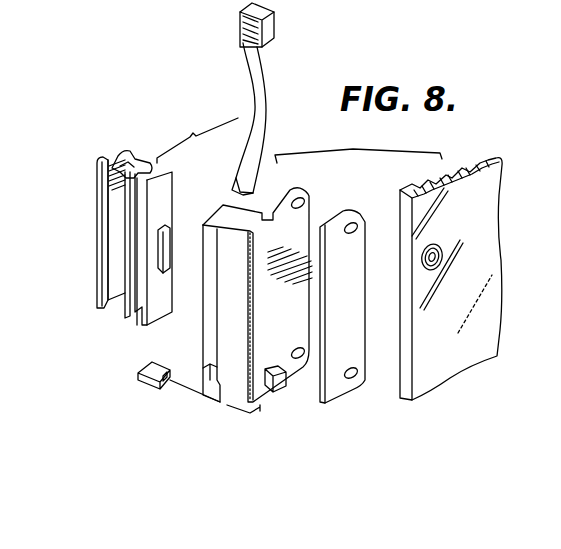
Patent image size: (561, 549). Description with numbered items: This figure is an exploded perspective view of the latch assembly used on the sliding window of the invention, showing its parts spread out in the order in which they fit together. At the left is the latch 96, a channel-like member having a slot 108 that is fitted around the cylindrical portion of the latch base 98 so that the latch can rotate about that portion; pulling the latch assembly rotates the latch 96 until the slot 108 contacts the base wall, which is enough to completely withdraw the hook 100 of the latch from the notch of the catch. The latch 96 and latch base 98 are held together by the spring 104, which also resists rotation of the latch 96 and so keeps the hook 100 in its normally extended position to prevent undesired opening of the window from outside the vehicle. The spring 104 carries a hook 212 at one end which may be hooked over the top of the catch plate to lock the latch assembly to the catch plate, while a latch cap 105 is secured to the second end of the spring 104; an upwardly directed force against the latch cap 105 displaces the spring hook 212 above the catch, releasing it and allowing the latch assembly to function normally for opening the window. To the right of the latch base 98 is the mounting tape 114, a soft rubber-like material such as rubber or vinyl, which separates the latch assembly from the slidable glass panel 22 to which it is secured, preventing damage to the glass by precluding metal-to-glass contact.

The slidable glass panel 22 is at (480, 262).
The latch 96 is at (98, 217).
The latch base 98 is at (218, 335).
The hook 100 is at (165, 262).
The spring 104 is at (250, 84).
The latch cap 105 is at (137, 375).
The slot 108 is at (121, 157).
The mounting tape 114 is at (343, 210).
The hook 212 is at (245, 20).